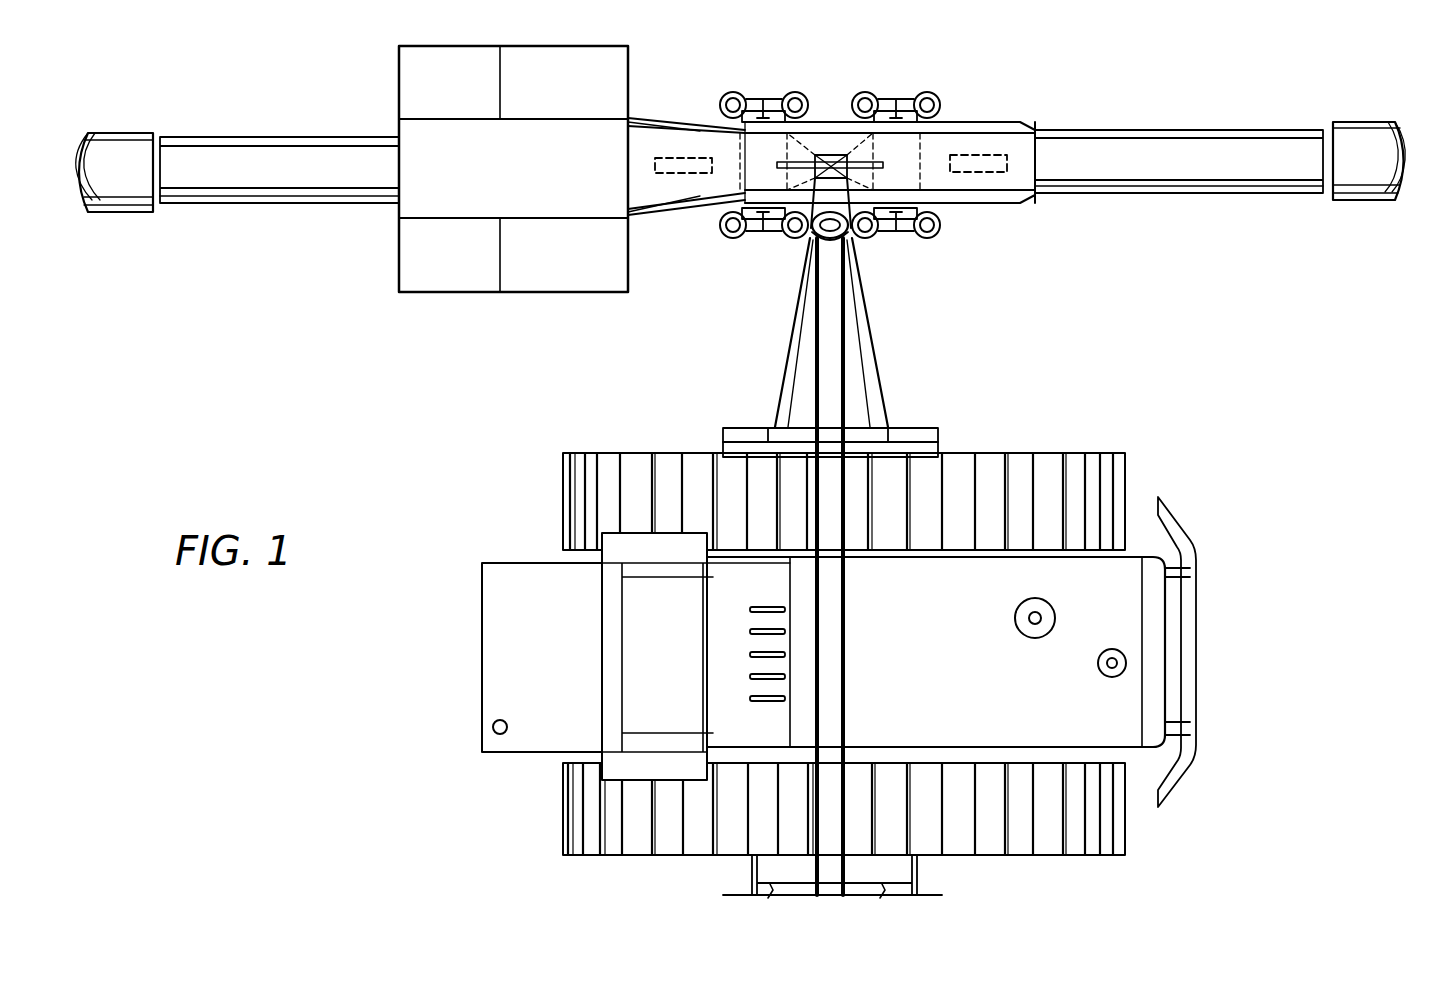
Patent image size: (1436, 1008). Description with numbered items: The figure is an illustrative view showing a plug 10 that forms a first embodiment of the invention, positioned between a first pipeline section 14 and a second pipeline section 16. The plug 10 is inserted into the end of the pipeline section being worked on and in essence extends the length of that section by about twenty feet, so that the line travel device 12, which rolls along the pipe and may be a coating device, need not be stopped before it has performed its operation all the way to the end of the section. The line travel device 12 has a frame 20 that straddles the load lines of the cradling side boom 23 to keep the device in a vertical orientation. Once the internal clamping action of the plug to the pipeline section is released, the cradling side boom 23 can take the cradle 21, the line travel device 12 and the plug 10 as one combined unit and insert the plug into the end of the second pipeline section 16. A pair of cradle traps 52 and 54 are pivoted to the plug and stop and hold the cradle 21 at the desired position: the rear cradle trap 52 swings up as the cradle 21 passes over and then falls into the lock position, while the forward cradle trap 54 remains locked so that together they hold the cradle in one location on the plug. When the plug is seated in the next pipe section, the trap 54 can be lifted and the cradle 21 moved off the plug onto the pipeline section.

The plug 10 is at (1108, 200).
The line travel device 12 is at (448, 300).
The first pipeline section 14 is at (122, 132).
The second pipeline section 16 is at (1368, 122).
The frame 20 is at (823, 130).
The cradle 21 is at (885, 233).
The cradling side boom 23 is at (1020, 450).
The rear cradle trap 52 is at (655, 168).
The forward cradle trap 54 is at (983, 152).